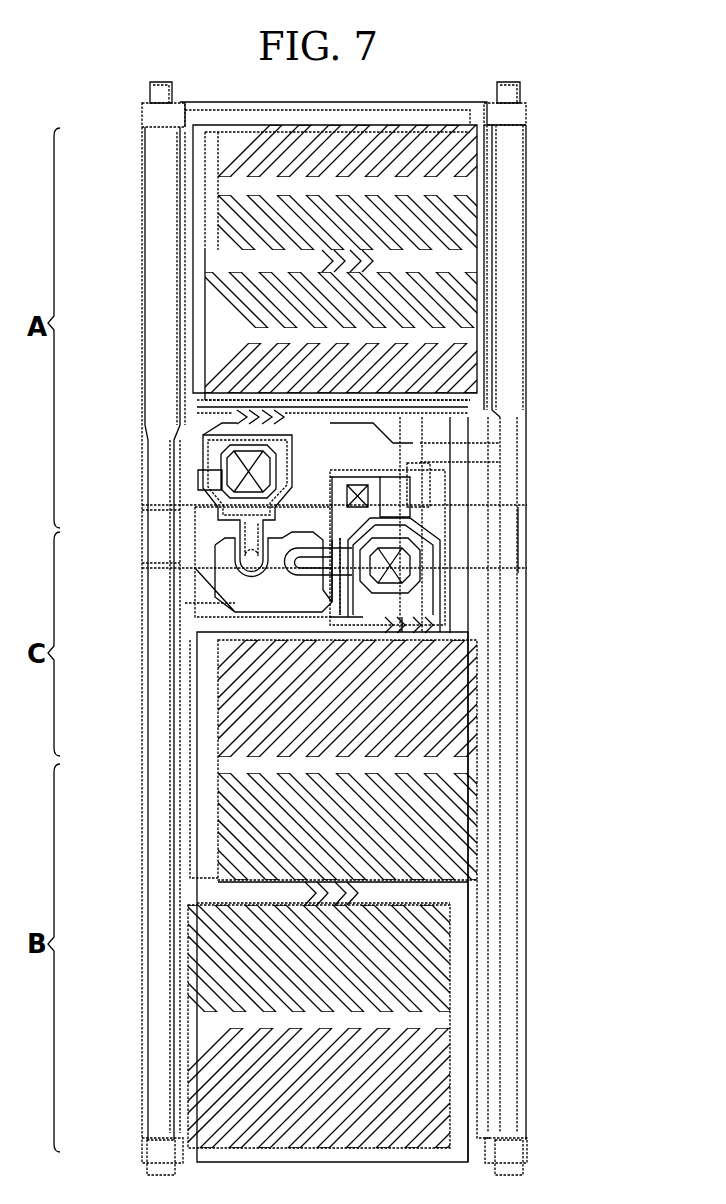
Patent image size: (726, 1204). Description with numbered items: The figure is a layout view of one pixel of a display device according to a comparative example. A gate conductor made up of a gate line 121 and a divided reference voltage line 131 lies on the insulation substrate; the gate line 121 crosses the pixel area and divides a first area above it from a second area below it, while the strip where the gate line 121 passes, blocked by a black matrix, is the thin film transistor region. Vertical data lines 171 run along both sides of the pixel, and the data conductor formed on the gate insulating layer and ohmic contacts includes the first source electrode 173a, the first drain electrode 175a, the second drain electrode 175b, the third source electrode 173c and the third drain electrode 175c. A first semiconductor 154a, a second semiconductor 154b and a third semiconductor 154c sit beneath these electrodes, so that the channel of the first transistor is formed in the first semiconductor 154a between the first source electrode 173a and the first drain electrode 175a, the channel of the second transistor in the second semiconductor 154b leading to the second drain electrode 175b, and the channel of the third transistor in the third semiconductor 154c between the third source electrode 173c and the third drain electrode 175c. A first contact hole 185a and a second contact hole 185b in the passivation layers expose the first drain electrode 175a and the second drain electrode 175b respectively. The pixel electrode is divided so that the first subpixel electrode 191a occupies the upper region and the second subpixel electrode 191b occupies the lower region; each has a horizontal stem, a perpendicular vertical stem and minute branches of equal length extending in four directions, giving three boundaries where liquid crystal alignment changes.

The divided reference voltage line 131 is at (195, 100).
The data line 171 is at (143, 300).
The first subpixel electrode 191a is at (480, 185).
The second subpixel electrode 191b is at (480, 773).
The gate line 121 is at (470, 480).
The first semiconductor 154a is at (228, 553).
The second semiconductor 154b is at (472, 645).
The third semiconductor 154c is at (400, 477).
The first source electrode 173a is at (215, 565).
The third source electrode 173c is at (470, 505).
The first drain electrode 175a is at (226, 537).
The second drain electrode 175b is at (440, 572).
The third drain electrode 175c is at (480, 522).
The first contact hole 185a is at (210, 480).
The second contact hole 185b is at (405, 580).